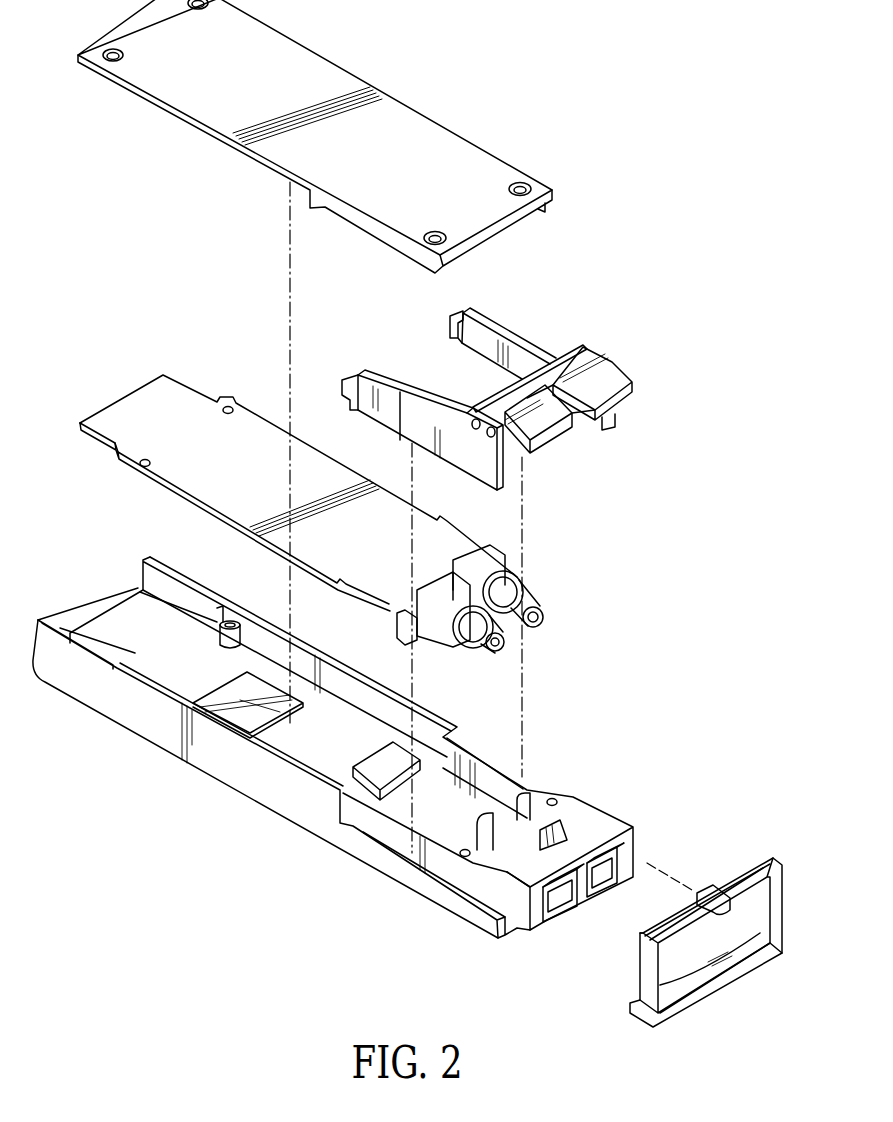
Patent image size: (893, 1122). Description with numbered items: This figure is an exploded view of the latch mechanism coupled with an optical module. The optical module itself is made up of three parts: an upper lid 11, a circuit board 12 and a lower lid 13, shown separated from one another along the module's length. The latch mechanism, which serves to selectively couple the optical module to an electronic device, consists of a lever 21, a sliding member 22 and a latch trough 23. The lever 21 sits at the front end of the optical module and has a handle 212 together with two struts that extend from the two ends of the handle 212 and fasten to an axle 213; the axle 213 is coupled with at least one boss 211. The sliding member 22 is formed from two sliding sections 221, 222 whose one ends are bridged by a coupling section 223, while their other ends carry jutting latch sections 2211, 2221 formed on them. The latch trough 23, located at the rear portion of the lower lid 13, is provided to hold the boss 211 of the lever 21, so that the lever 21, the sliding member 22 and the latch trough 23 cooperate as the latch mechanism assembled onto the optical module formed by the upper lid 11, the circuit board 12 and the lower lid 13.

The upper lid 11 is at (380, 107).
The circuit board 12 is at (173, 390).
The lower lid 13 is at (248, 782).
The lever 21 is at (664, 940).
The boss 211 is at (713, 890).
The handle 212 is at (677, 993).
The axle 213 is at (660, 928).
The sliding member 22 is at (507, 385).
The sliding section 221 is at (407, 404).
The latch section 2211 is at (345, 380).
The sliding section 222 is at (501, 355).
The latch section 2221 is at (457, 320).
The coupling section 223 is at (550, 422).
The latch trough 23 is at (557, 817).